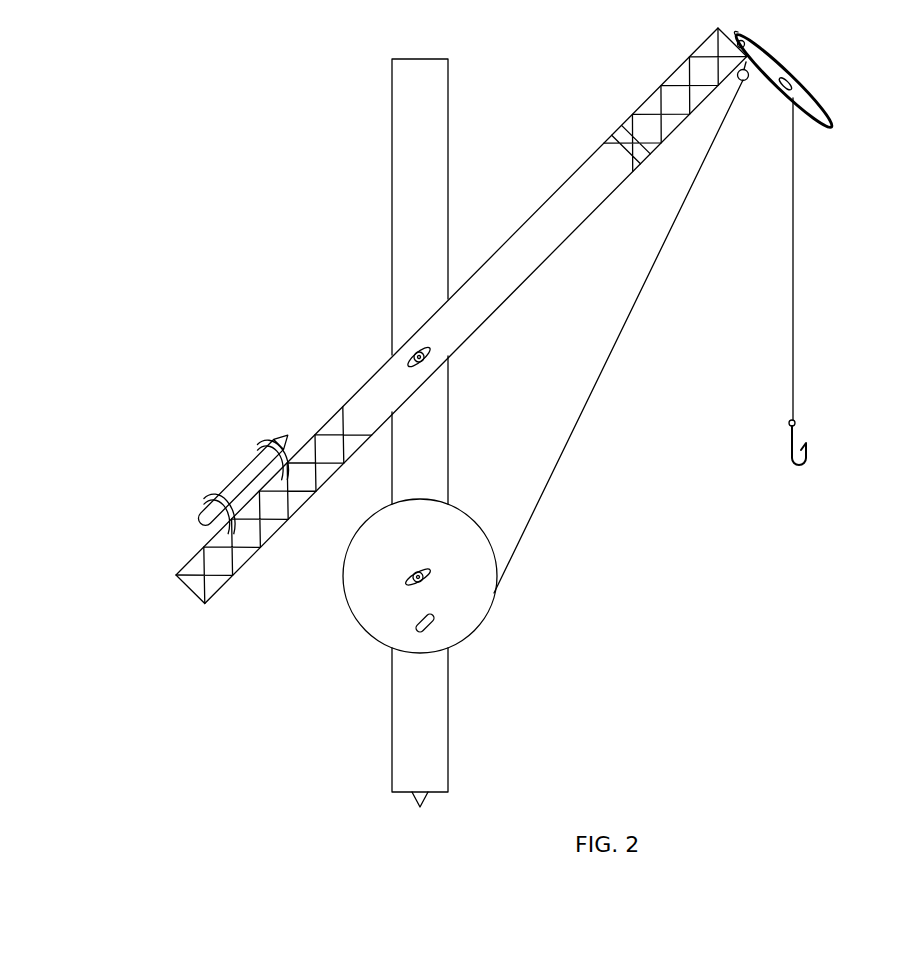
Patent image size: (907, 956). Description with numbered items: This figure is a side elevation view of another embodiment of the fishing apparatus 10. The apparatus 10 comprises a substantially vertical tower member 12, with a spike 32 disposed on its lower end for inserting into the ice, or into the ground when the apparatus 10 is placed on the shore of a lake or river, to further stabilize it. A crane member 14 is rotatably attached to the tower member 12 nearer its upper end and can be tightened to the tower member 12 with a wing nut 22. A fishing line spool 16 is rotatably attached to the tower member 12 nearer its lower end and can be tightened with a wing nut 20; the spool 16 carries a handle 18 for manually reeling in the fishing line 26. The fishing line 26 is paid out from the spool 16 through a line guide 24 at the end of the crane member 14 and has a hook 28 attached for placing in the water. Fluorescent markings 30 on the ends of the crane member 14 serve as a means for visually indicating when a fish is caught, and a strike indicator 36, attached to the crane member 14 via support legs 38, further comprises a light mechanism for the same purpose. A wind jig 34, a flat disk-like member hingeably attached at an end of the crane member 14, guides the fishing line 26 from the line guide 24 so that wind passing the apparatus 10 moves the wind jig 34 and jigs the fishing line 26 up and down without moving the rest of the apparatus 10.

The fishing apparatus 10 is at (549, 82).
The tower member 12 is at (416, 148).
The crane member 14 is at (376, 389).
The spool 16 is at (370, 585).
The handle 18 is at (430, 624).
The wing nut 20 is at (418, 569).
The wing nut 22 is at (428, 366).
The line guide 24 is at (746, 86).
The fishing line 26 is at (795, 291).
The hook 28 is at (795, 430).
The fluorescent markings 30 is at (680, 97).
The spike 32 is at (425, 800).
The wind jig 34 is at (810, 100).
The strike indicator 36 is at (243, 482).
The support legs 38 is at (224, 522).